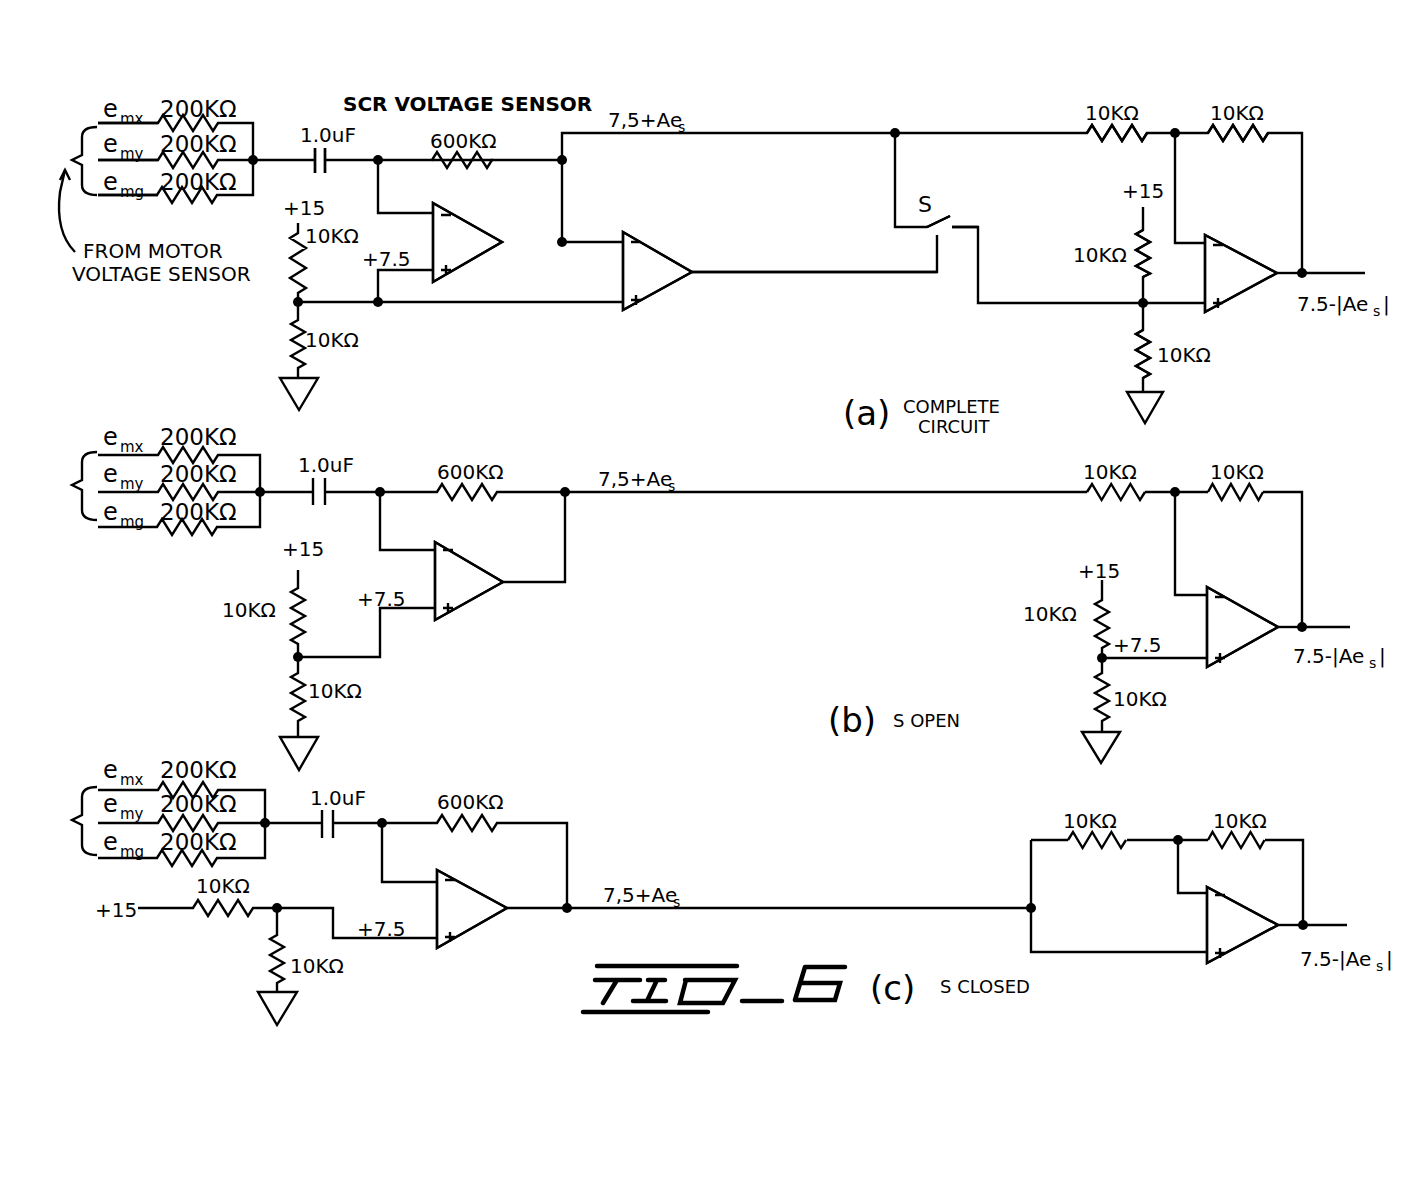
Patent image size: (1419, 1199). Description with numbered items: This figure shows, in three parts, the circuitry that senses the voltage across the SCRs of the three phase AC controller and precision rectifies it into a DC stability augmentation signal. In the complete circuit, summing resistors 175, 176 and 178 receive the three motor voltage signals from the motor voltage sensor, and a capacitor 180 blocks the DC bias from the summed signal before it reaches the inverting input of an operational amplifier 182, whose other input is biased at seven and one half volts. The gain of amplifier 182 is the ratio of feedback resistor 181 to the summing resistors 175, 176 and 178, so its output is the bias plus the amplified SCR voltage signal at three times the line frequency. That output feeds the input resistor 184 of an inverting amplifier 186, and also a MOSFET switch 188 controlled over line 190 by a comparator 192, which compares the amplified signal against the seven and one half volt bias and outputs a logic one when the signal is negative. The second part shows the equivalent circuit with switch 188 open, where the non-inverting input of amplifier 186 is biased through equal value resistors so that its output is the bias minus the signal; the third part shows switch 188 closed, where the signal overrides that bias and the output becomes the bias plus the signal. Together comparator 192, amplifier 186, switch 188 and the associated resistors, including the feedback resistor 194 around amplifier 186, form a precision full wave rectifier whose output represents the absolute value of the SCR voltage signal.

The summing resistor 175 is at (217, 130).
The summing resistor 176 is at (217, 168).
The summing resistor 178 is at (185, 202).
The capacitor 180 is at (323, 177).
The feedback resistor 181 is at (468, 178).
The operational amplifier 182 is at (475, 253).
The input resistor 184 is at (1105, 140).
The inverting amplifier 186 is at (1247, 282).
The MOSFET switch 188 is at (952, 220).
The line 190 is at (792, 273).
The comparator 192 is at (668, 263).
The 10K ohm feedback resistor 194 is at (1240, 140).